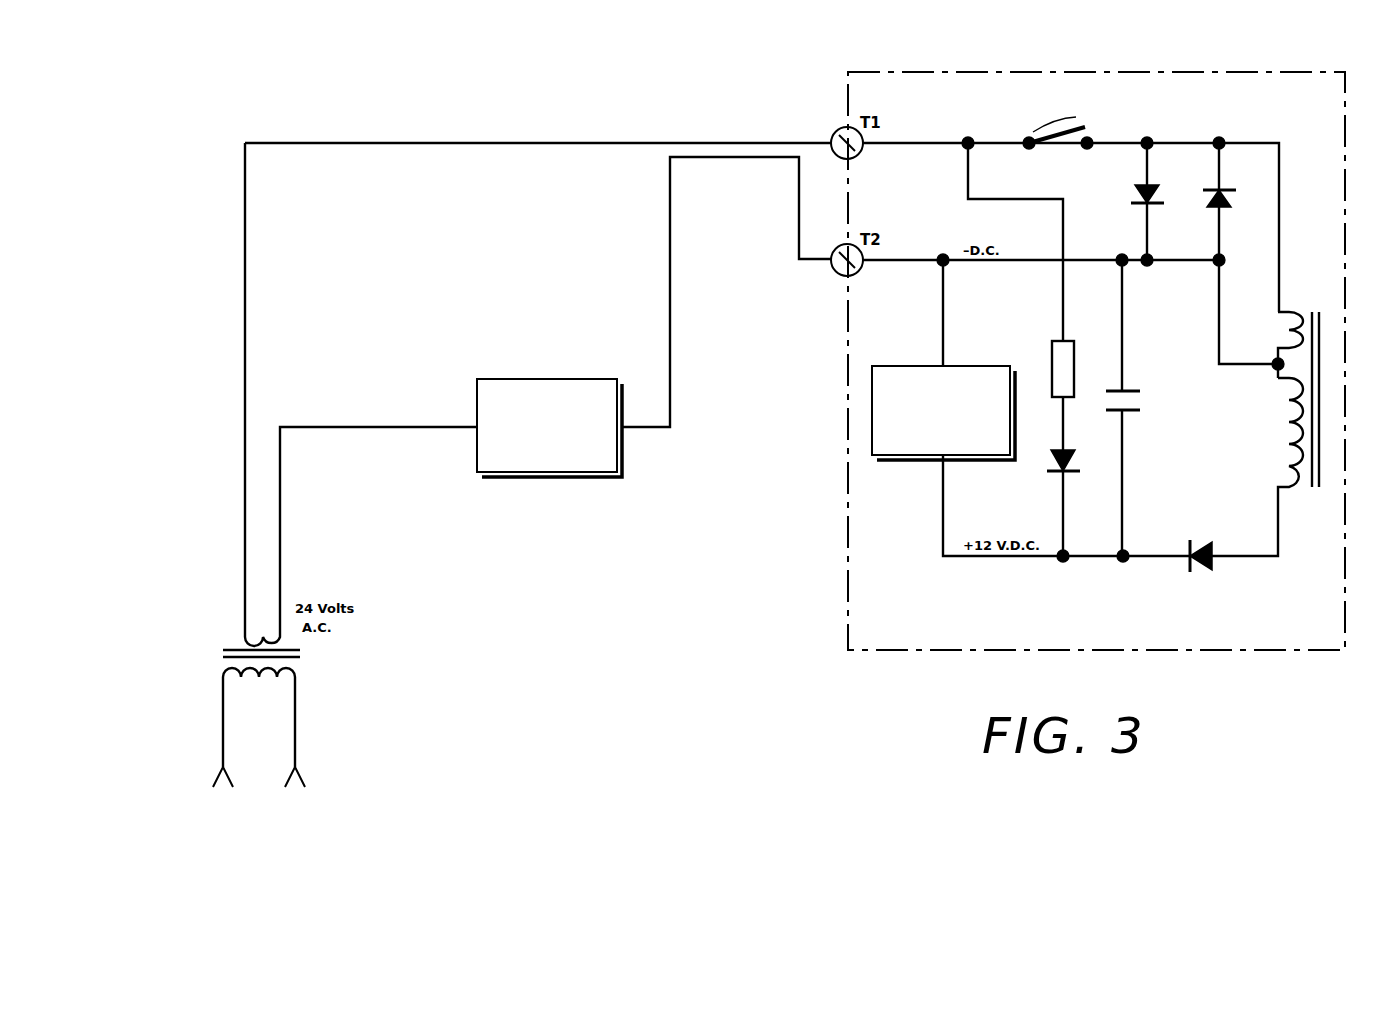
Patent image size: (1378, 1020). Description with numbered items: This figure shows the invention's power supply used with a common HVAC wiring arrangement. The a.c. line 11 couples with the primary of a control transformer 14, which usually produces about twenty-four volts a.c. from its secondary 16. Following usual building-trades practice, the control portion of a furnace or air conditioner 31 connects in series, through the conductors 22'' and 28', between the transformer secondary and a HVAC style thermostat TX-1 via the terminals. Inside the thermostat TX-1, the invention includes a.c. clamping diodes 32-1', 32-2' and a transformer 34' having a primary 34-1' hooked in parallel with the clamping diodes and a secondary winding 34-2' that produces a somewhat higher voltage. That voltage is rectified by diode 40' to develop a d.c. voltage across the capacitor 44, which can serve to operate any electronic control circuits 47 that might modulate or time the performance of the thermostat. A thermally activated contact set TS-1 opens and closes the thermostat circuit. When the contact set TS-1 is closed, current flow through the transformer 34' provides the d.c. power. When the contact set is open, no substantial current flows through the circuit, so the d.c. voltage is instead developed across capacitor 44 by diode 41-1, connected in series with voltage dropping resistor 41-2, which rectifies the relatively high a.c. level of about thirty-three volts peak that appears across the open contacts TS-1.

The a.c. line 11 is at (232, 793).
The control transformer 14 is at (308, 660).
The secondary 16 is at (240, 584).
The conductor 22'' is at (538, 117).
The conductor 28' is at (719, 292).
The furnace or air conditioner 31 is at (520, 378).
The a.c. clamping diode 32-1' is at (1216, 250).
The a.c. clamping diode 32-2' is at (1120, 201).
The transformer 34' is at (1321, 372).
The primary 34-1' is at (1229, 337).
The secondary winding 34-2' is at (1253, 467).
The diode 40' is at (1180, 532).
The diode 41-1 is at (1054, 478).
The voltage dropping resistor 41-2 is at (1042, 357).
The capacitor 44 is at (1148, 398).
The electronic control circuits 47 is at (925, 462).
The HVAC style thermostat TX-1 is at (975, 70).
The thermally activated contact set TS-1 is at (1027, 131).